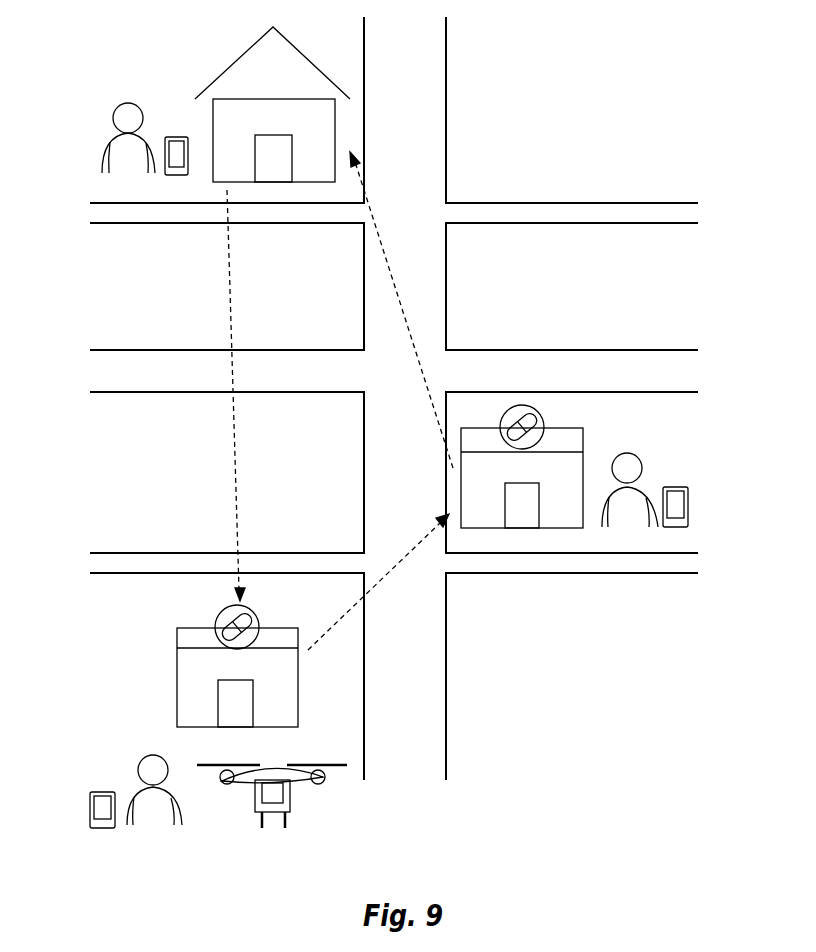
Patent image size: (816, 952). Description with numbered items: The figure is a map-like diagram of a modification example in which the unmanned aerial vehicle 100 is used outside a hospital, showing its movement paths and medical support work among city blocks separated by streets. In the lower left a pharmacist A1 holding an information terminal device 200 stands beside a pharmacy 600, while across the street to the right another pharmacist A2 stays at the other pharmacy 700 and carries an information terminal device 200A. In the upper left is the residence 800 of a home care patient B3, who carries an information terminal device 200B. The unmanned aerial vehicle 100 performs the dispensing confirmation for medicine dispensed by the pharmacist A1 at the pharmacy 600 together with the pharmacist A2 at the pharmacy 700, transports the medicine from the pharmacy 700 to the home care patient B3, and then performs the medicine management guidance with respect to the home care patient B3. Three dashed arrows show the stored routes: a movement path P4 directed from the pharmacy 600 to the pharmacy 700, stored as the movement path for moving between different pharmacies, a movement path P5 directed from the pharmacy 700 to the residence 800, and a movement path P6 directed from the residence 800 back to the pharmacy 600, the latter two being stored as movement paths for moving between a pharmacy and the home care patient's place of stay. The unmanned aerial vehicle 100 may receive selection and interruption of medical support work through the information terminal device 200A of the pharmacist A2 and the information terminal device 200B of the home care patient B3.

The unmanned aerial vehicle 100 is at (311, 820).
The information terminal device 200 is at (90, 822).
The information terminal device 200A is at (688, 520).
The information terminal device 200B is at (170, 176).
The pharmacy 600 is at (180, 640).
The pharmacy 700 is at (575, 442).
The residence 800 is at (233, 76).
The pharmacist A1 is at (137, 784).
The pharmacist A2 is at (645, 482).
The home care patient B3 is at (125, 160).
The movement path P4 is at (377, 590).
The movement path P5 is at (382, 250).
The movement path P6 is at (232, 404).